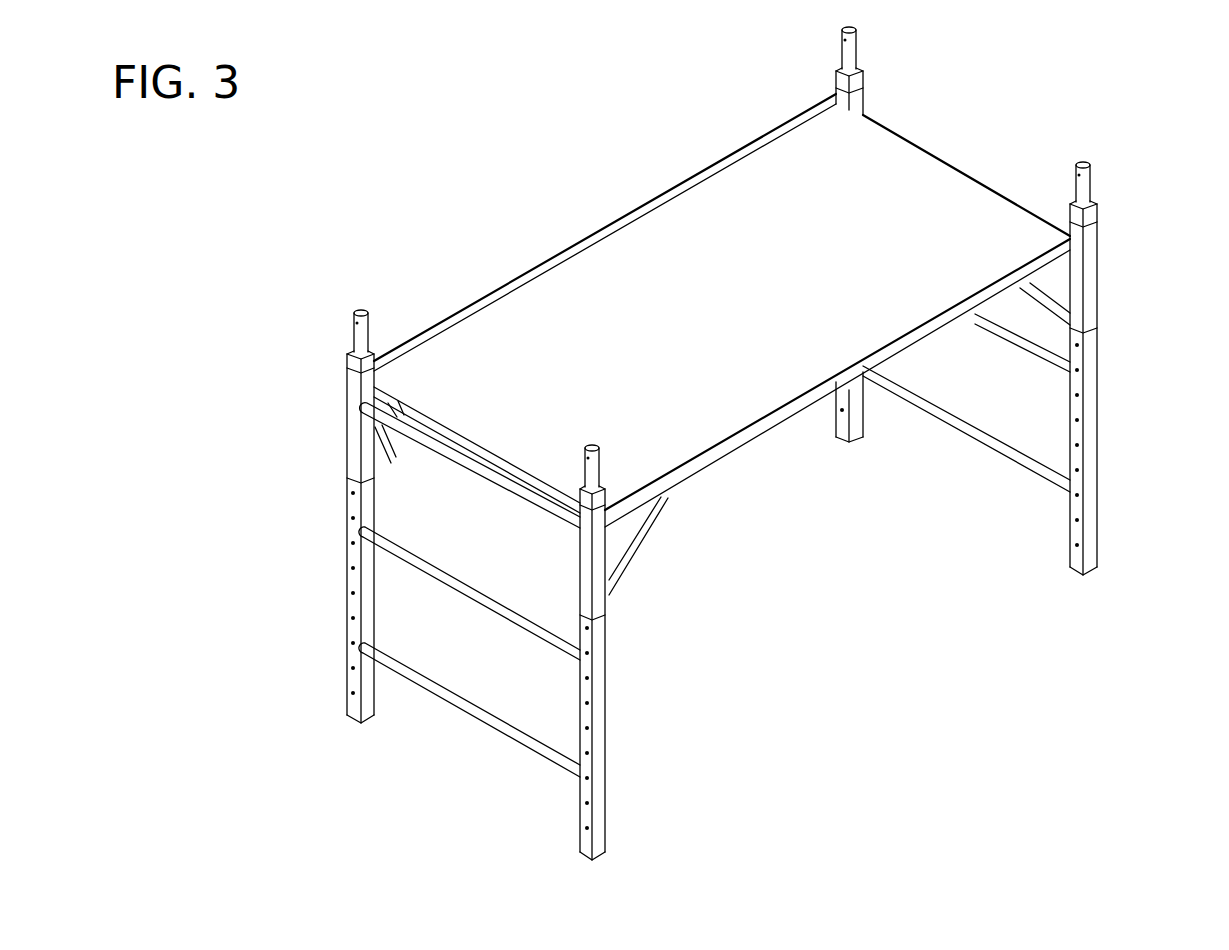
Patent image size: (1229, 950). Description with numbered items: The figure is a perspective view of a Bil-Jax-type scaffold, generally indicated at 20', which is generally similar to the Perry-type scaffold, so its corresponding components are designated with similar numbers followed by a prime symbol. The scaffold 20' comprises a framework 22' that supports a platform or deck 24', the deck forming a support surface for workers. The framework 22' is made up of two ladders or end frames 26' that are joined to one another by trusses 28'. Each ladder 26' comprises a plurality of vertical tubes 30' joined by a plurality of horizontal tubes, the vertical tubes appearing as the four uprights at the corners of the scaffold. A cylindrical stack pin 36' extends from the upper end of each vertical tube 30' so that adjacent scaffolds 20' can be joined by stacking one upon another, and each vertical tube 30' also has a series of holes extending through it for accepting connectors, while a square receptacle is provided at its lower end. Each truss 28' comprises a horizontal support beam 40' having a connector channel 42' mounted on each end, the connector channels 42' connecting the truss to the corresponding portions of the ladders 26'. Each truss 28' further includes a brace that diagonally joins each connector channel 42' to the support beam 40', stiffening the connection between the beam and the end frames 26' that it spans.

The Bil-Jax-type scaffold 20' is at (720, 443).
The framework 22' is at (1038, 475).
The platform or deck 24' is at (722, 227).
The ladder or end frame 26' is at (720, 443).
The truss 28' is at (722, 350).
The vertical tube 30' is at (731, 464).
The cylindrical stack pin 36' is at (719, 257).
The horizontal support beam 40' is at (722, 302).
The connector channel 42' is at (722, 354).